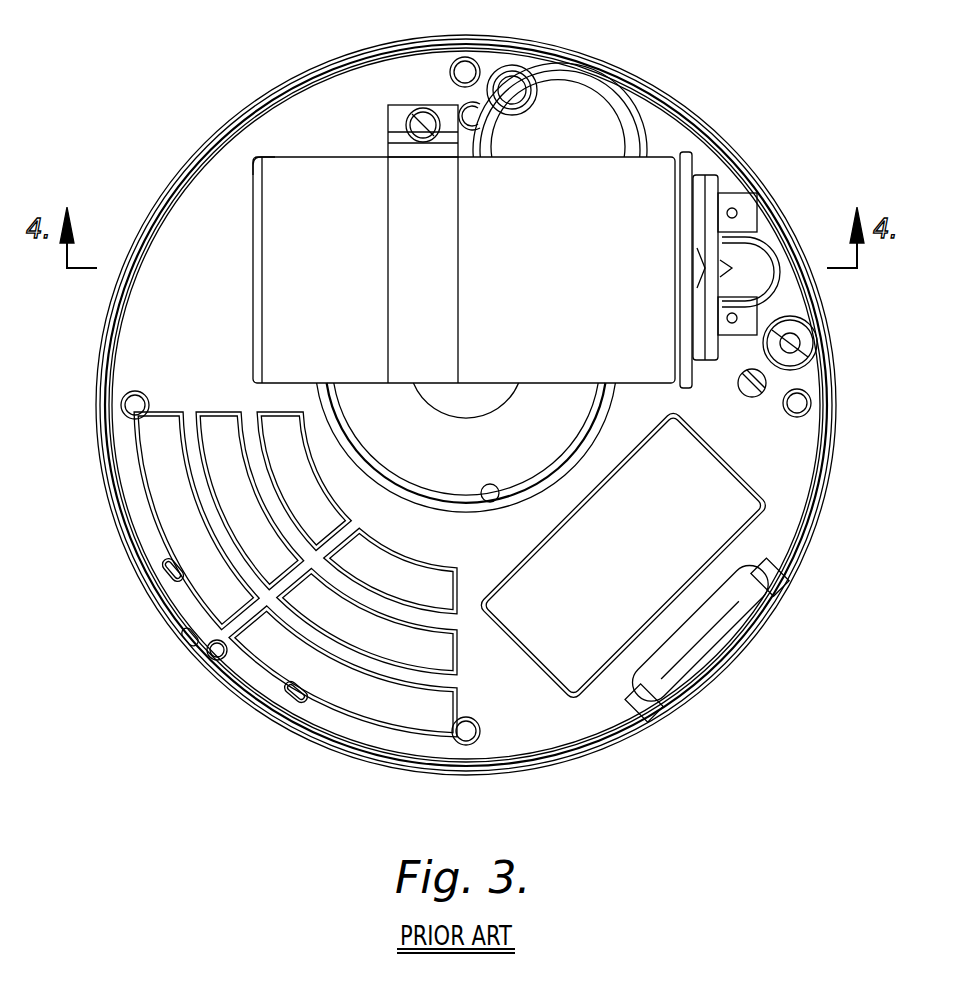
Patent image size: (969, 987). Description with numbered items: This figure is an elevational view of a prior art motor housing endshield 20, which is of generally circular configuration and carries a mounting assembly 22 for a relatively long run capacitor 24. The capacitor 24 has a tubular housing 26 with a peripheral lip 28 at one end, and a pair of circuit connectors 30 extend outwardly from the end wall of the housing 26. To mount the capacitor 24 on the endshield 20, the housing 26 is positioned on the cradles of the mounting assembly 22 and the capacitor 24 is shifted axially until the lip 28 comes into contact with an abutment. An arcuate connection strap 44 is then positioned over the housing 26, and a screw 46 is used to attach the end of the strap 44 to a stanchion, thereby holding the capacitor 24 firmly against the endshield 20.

The motor housing endshield 20 is at (686, 50).
The mounting assembly 22 is at (490, 237).
The capacitor 24 is at (258, 153).
The tubular housing 26 is at (278, 268).
The peripheral lip 28 is at (683, 326).
The circuit connectors 30 is at (757, 215).
The arcuate connection strap 44 is at (443, 303).
The screw 46 is at (408, 124).